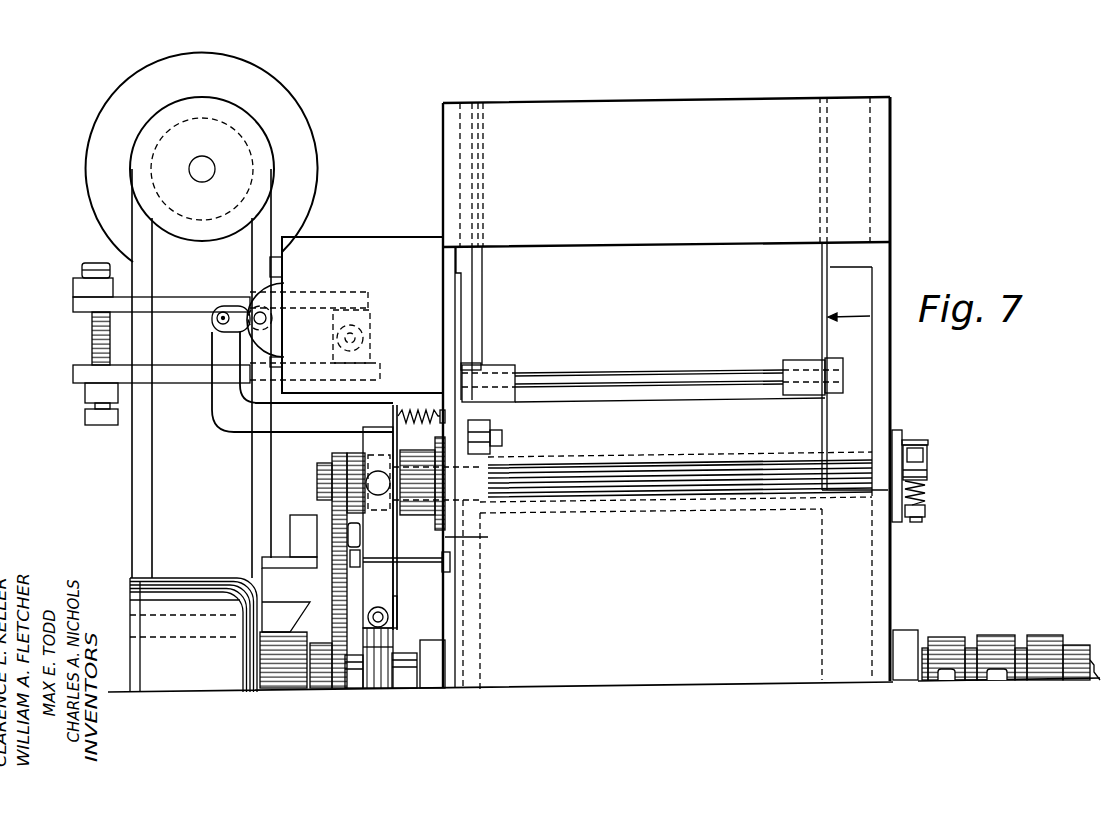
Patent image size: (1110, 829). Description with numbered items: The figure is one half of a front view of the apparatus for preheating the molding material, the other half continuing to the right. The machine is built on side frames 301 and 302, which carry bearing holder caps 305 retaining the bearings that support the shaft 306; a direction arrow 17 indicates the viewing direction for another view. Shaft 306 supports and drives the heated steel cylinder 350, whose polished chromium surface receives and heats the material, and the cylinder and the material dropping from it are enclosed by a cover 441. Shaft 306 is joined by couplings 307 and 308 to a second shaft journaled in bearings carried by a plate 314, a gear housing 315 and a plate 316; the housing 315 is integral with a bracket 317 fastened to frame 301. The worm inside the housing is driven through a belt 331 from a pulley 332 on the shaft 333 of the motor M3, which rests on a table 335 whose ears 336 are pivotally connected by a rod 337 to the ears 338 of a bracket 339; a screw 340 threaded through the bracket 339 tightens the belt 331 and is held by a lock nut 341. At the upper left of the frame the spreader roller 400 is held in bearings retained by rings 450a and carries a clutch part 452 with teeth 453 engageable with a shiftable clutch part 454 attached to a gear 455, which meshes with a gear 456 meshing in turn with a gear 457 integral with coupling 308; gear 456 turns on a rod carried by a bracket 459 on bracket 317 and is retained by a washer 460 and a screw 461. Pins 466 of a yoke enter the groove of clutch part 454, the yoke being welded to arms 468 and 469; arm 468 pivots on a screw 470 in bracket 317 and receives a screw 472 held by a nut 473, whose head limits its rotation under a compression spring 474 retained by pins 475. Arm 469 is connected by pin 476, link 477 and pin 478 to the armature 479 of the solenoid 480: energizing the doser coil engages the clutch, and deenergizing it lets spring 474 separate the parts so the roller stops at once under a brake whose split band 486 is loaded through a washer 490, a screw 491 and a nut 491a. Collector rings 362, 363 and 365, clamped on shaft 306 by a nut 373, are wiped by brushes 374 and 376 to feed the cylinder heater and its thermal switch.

The motor M3 is at (230, 56).
The pulley 332 is at (224, 99).
The motor shaft 333 is at (204, 157).
The belt 331 is at (153, 449).
The table 335 is at (73, 305).
The screw 340 is at (92, 340).
The bracket 339 is at (163, 384).
The ears 338 is at (372, 361).
The lock nut 341 is at (85, 394).
The link 477 is at (222, 331).
The pin 476 is at (217, 317).
The pin 478 is at (268, 321).
The armature 479 is at (280, 276).
The solenoid 480 is at (350, 236).
The ears 336 is at (370, 316).
The rod 337 is at (364, 340).
The compression spring 474 is at (421, 408).
The pins 475 is at (442, 418).
The teeth 453 is at (400, 447).
The clutch part 452 is at (418, 450).
The arm 469 is at (230, 433).
The pins 466 is at (377, 471).
The shiftable clutch part 454 is at (398, 566).
The arm 468 is at (398, 598).
The screw 470 is at (379, 607).
The gear 455 is at (347, 456).
The gear 457 is at (342, 685).
The bracket 459 is at (316, 513).
The gear 456 is at (332, 556).
The screw 461 is at (360, 538).
The washer 460 is at (360, 574).
The screw 472 is at (398, 557).
The nut 473 is at (451, 565).
The plate 314 is at (298, 641).
The bracket 317 is at (263, 565).
The plate 316 is at (130, 582).
The gear housing 315 is at (224, 578).
The coupling 308 is at (372, 690).
The coupling 307 is at (393, 690).
The bearing holder caps 305 is at (433, 641).
The frame 301 is at (443, 137).
The frame 302 is at (887, 158).
The direction of view 17 is at (849, 307).
The spreader roller 400 is at (743, 484).
The cover 441 is at (680, 496).
The heated steel cylinder 350 is at (838, 686).
The rings 450a is at (896, 430).
The nut 491a is at (926, 443).
The split band 486 is at (927, 469).
The washer 490 is at (926, 508).
The screw 491 is at (919, 518).
The collector ring 362 is at (950, 637).
The brush 374 is at (950, 673).
The collector ring 365 is at (999, 635).
The brush 376 is at (998, 674).
The collector ring 363 is at (1037, 638).
The nut 373 is at (1083, 645).
The shaft 306 is at (1099, 679).